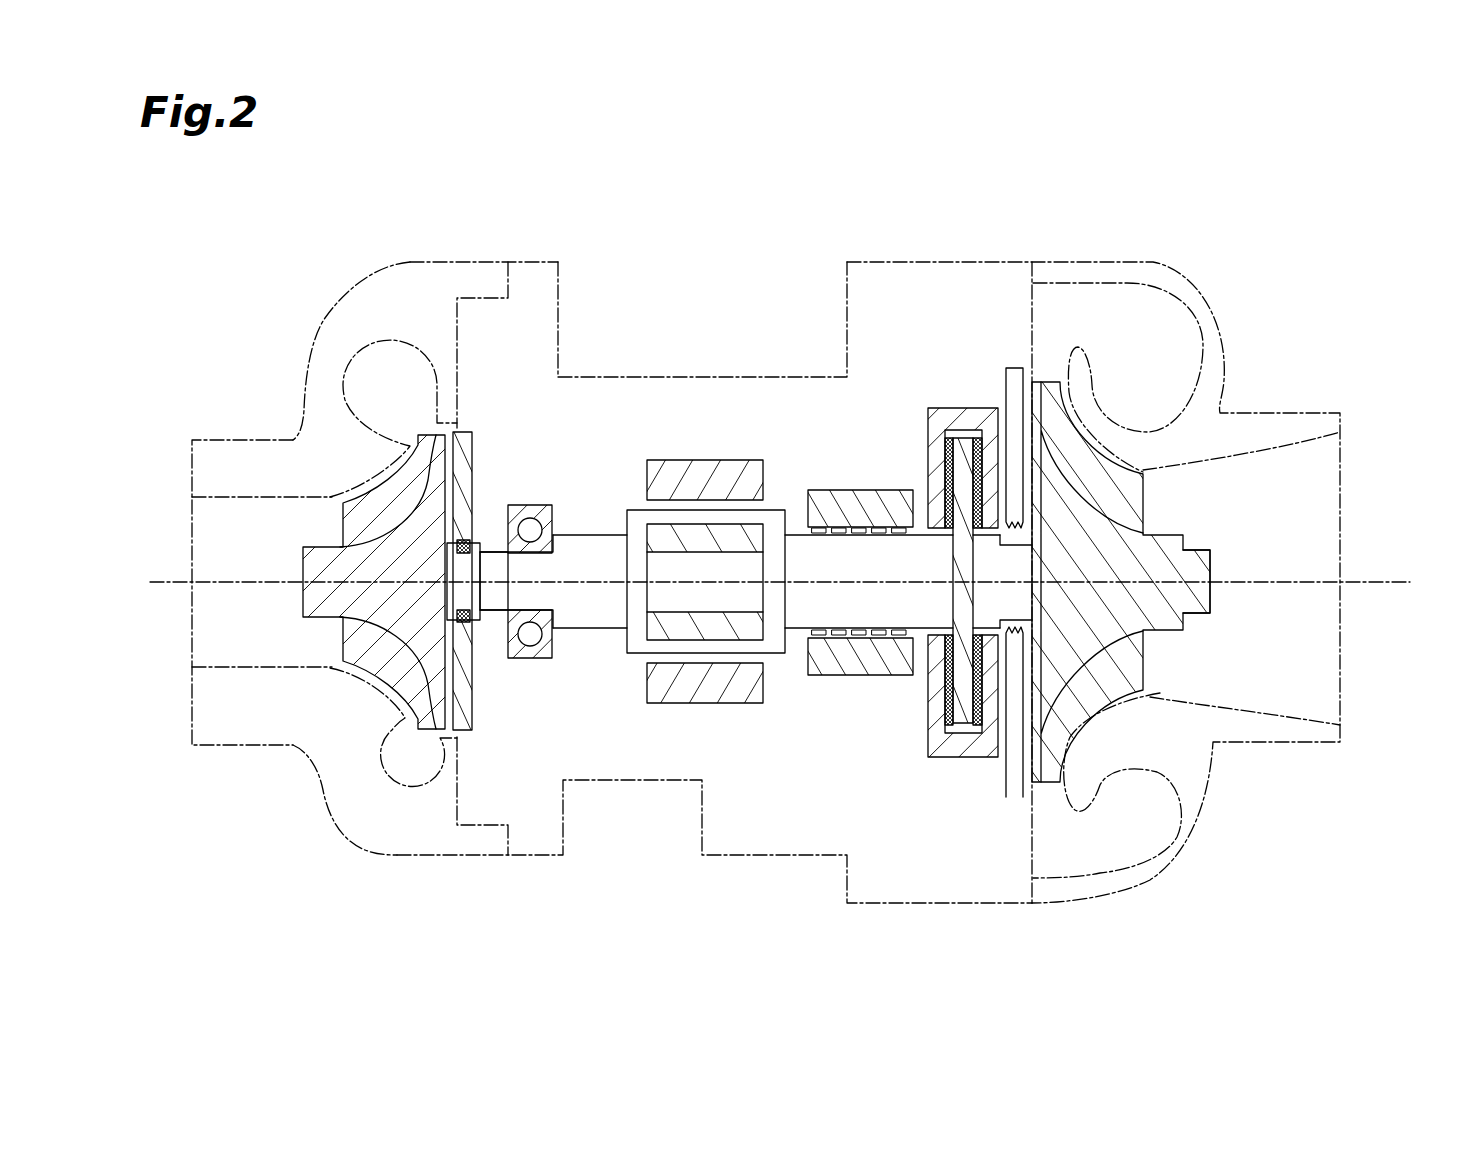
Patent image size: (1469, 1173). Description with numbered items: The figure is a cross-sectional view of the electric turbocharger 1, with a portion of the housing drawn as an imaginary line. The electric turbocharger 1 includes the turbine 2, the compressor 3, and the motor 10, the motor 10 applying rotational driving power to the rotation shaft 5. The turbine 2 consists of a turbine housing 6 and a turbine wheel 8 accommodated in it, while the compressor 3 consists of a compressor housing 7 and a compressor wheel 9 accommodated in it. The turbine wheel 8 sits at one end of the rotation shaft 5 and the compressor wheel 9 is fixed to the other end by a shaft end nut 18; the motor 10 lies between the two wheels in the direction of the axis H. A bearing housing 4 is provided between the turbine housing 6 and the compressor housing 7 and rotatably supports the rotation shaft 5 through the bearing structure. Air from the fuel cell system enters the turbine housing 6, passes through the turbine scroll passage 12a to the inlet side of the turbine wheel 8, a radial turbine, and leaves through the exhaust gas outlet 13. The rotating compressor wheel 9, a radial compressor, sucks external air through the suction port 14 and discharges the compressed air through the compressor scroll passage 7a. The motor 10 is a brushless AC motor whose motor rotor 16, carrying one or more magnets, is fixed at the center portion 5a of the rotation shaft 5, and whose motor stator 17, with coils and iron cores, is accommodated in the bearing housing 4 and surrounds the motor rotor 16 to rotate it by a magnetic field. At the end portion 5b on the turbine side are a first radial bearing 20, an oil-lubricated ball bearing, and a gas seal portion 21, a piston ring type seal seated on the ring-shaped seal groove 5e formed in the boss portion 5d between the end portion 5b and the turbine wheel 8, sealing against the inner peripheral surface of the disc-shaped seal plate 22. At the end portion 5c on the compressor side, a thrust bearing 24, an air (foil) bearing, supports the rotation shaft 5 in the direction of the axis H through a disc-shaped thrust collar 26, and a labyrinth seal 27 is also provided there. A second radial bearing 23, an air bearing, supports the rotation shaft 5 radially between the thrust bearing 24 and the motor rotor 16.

The electric turbocharger 1 is at (365, 233).
The turbine 2 is at (306, 838).
The compressor 3 is at (1240, 865).
The bearing housing 4 is at (700, 372).
The rotation shaft 5 is at (642, 652).
The center portion 5a is at (798, 547).
The end portion 5b is at (494, 560).
The end portion 5c is at (961, 526).
The boss portion 5d is at (447, 622).
The seal groove 5e is at (470, 541).
The turbine housing 6 is at (350, 533).
The compressor housing 7 is at (1124, 557).
The compressor scroll passage 7a is at (1133, 347).
The turbine wheel 8 is at (340, 650).
The compressor wheel 9 is at (1121, 582).
The motor 10 is at (705, 654).
The turbine scroll passage 12a is at (393, 373).
The exhaust gas outlet 13 is at (237, 497).
The suction port 14 is at (1283, 448).
The motor rotor 16 is at (658, 630).
The motor stator 17 is at (678, 693).
The shaft end nut 18 is at (1213, 603).
The first radial bearing 20 is at (538, 660).
The gas seal portion 21 is at (495, 615).
The seal plate 22 is at (473, 448).
The second radial bearing 23 is at (878, 680).
The thrust bearing 24 is at (953, 760).
The thrust collar 26 is at (965, 740).
The labyrinth seal 27 is at (1016, 366).
The axis H is at (1408, 580).